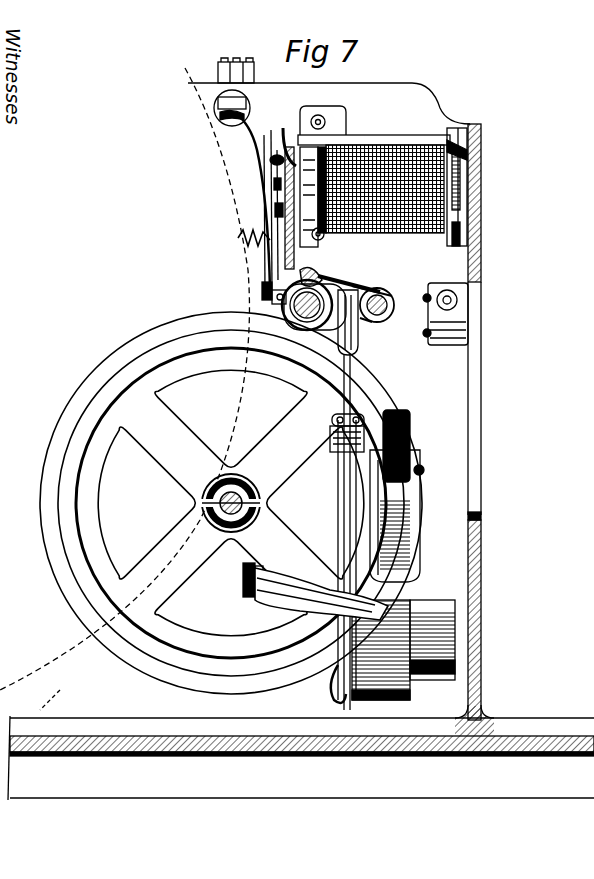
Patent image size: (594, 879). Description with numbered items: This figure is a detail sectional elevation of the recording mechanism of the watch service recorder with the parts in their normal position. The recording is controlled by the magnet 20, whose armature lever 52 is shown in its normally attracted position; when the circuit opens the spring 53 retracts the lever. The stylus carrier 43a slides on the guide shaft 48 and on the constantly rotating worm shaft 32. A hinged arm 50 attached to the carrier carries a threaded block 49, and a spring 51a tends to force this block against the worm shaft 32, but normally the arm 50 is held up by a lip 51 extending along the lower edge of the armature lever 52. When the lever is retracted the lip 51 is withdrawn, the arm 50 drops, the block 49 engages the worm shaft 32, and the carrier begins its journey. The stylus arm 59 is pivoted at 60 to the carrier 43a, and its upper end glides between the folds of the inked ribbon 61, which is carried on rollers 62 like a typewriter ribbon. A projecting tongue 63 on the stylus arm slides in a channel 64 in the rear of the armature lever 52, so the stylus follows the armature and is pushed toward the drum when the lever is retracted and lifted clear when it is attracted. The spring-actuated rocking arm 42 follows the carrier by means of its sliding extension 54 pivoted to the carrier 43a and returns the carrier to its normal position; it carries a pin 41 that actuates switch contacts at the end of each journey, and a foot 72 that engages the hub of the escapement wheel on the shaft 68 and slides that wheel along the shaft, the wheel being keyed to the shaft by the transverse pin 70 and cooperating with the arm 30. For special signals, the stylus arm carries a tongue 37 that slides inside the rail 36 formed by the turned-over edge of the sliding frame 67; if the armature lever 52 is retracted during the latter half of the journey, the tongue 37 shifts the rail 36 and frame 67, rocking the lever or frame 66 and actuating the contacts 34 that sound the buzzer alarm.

The magnet 20 is at (355, 152).
The arm 30 is at (316, 240).
The worm shaft 32 is at (283, 308).
The contacts 34 is at (447, 348).
The rail 36 is at (296, 130).
The tongue 37 is at (293, 146).
The pin 41 is at (412, 462).
The rocking arm 42 is at (345, 506).
The stylus carrier 43a is at (358, 322).
The guide shaft 48 is at (386, 300).
The threaded block 49 is at (324, 284).
The hinged arm 50 is at (356, 284).
The lip 51 is at (284, 268).
The spring 51a is at (388, 309).
The armature lever 52 is at (284, 258).
The spring 53 is at (238, 238).
The sliding extension 54 is at (358, 366).
The stylus arm 59 is at (276, 168).
The pivot 60 is at (262, 291).
The inked ribbon 61 is at (222, 120).
The rollers 62 is at (222, 69).
The projecting tongue 63 is at (282, 222).
The channel 64 is at (282, 210).
The rocking lever or frame 66 is at (455, 152).
The sliding frame 67 is at (386, 146).
The shaft 68 is at (243, 492).
The transverse pin or key 70 is at (201, 503).
The foot 72 is at (243, 580).